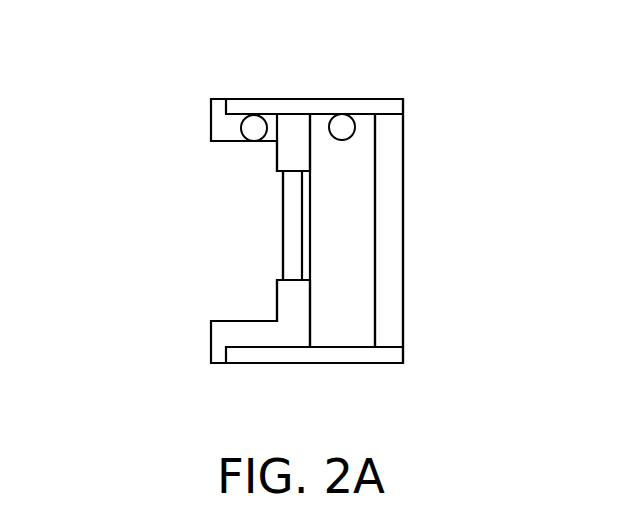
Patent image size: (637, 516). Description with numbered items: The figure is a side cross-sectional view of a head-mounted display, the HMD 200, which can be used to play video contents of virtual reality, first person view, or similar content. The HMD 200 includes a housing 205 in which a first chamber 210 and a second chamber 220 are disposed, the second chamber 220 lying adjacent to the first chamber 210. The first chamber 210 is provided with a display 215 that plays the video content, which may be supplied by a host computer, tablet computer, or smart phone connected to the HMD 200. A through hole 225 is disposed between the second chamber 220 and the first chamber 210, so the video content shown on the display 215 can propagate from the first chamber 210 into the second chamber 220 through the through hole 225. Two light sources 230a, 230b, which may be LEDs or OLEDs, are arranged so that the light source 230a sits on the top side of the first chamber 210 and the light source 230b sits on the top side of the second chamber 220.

The HMD 200 is at (596, 397).
The housing 205 is at (378, 106).
The first chamber 210 is at (322, 242).
The display 215 is at (393, 228).
The second chamber 220 is at (233, 222).
The through hole 225 is at (262, 199).
The light source 230a is at (343, 126).
The light source 230b is at (255, 127).